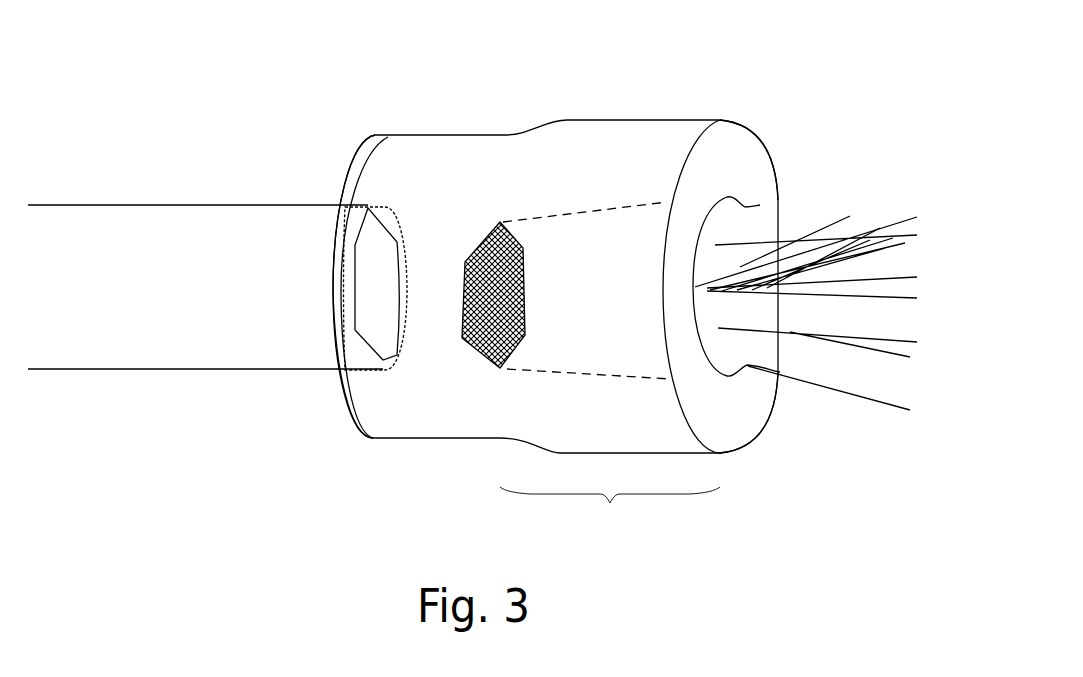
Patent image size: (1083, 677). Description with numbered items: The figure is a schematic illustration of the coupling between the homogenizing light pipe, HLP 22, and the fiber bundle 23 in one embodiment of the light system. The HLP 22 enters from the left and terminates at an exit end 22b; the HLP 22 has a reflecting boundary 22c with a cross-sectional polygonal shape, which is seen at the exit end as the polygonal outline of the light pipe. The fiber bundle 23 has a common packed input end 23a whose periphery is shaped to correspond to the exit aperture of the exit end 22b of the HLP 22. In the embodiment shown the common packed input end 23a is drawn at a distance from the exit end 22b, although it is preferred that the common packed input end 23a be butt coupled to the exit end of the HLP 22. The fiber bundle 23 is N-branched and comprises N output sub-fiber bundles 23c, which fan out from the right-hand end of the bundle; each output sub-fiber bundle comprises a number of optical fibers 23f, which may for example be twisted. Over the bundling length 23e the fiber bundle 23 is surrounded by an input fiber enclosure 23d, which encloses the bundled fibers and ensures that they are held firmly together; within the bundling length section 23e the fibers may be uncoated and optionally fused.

The HLP 22 is at (97, 182).
The exit end 22b is at (375, 250).
The reflecting boundary 22c is at (340, 301).
The fiber bundle 23 is at (608, 96).
The common packed input end 23a is at (499, 212).
The output sub-fiber bundles 23c is at (853, 207).
The input fiber enclosure 23d is at (341, 413).
The bundling length 23e is at (610, 512).
The optical fibers 23f is at (740, 263).